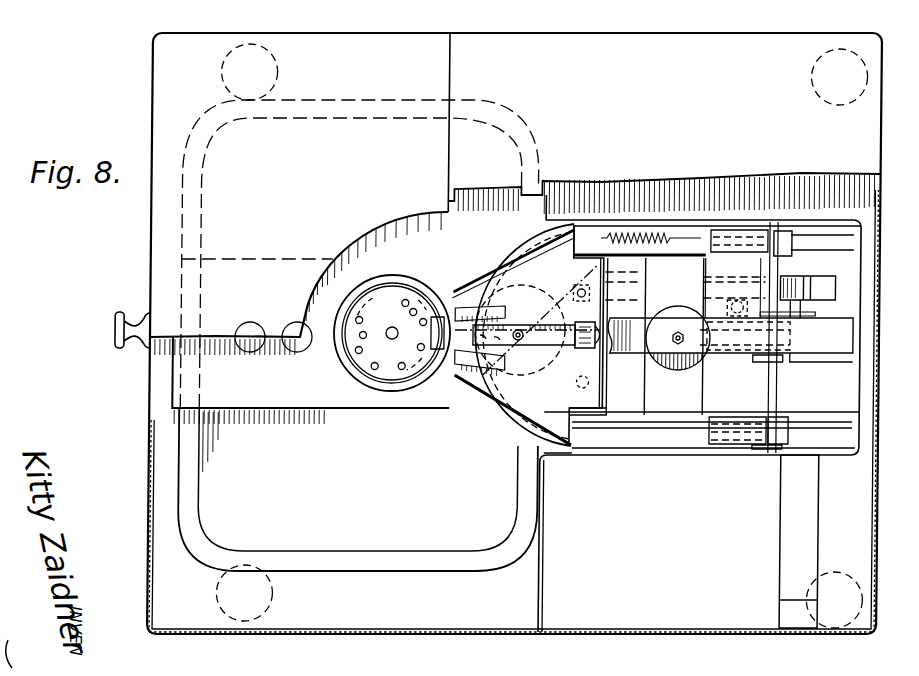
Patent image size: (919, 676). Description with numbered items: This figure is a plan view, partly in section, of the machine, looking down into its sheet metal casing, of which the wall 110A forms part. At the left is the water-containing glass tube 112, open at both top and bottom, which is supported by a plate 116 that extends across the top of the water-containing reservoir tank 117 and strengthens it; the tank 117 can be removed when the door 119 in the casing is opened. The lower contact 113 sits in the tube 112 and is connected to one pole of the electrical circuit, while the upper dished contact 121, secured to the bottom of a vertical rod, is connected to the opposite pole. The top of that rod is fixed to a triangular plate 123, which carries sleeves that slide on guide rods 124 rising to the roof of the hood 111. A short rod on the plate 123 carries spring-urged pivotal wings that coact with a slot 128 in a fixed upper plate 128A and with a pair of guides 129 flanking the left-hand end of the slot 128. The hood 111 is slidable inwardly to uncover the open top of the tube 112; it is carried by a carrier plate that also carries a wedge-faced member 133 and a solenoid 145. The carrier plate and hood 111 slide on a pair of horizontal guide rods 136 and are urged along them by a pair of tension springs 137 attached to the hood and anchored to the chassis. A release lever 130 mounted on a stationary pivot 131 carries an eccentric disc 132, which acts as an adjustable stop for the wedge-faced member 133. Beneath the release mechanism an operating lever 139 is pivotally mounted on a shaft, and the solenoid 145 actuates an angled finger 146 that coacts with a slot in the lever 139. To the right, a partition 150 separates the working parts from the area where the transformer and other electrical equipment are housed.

The hood 111 is at (478, 427).
The housing wall 110A is at (360, 236).
The door 119 is at (150, 262).
The reservoir tank 117 is at (180, 462).
The plate 116 is at (275, 397).
The glass tube 112 is at (364, 385).
The lower contact 113 is at (395, 370).
The upper dished contact 121 is at (459, 279).
The guides 129 is at (457, 372).
The slot 128 is at (521, 300).
The fixed upper plate 128A is at (568, 401).
The triangular plate 123 is at (606, 360).
The guide rods 124 is at (597, 258).
The tension springs 137 is at (633, 214).
The horizontal guide rods 136 is at (668, 232).
The stationary pivot 131 is at (768, 398).
The eccentric disc 132 is at (680, 362).
The release lever 130 is at (637, 327).
The wedge-faced member 133 is at (736, 343).
The solenoid 145 is at (752, 297).
The operating lever 139 is at (792, 282).
The angled finger 146 is at (802, 320).
The partition 150 is at (546, 540).